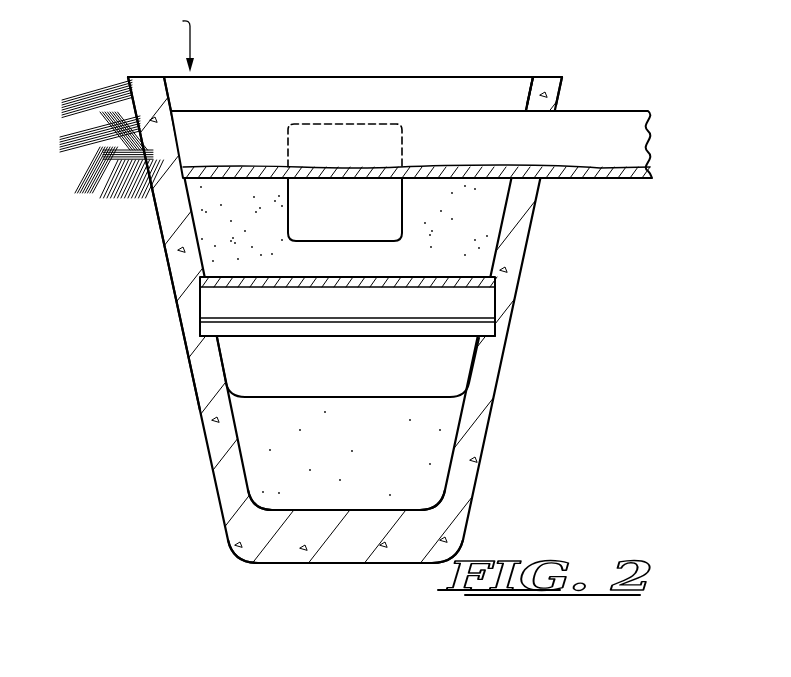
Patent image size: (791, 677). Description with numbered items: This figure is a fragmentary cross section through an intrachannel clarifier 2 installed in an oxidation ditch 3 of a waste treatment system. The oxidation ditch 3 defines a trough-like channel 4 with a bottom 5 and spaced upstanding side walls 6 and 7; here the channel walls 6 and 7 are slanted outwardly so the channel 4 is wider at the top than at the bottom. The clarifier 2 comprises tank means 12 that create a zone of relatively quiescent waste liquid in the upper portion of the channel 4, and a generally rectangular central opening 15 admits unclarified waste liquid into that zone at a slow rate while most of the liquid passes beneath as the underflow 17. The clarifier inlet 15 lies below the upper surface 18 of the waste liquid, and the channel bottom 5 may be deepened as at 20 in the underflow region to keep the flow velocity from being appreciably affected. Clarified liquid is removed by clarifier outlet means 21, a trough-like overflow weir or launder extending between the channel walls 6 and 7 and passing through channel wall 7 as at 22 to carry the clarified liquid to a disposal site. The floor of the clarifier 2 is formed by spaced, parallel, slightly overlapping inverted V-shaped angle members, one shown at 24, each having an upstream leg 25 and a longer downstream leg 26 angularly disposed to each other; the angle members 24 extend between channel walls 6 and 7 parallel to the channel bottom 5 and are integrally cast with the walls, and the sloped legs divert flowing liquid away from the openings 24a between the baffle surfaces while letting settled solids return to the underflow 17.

The intrachannel clarifier 2 is at (181, 41).
The oxidation ditch 3 is at (531, 231).
The channel 4 is at (224, 243).
The channel bottom 5 is at (343, 564).
The channel side wall 6 is at (164, 239).
The channel side wall 7 is at (540, 190).
The tank means 12 is at (535, 77).
The central opening 15 is at (356, 222).
The underflow 17 is at (393, 465).
The upper surface of the waste liquid 18 is at (230, 110).
The deepened portion of channel bottom 20 is at (295, 510).
The clarifier outlet means 21 is at (402, 118).
The weir extension through channel wall 22 is at (612, 111).
The angle member 24 is at (348, 306).
The openings between baffle surfaces 24a is at (383, 327).
The upstream leg 25 is at (470, 307).
The downstream leg 26 is at (494, 333).